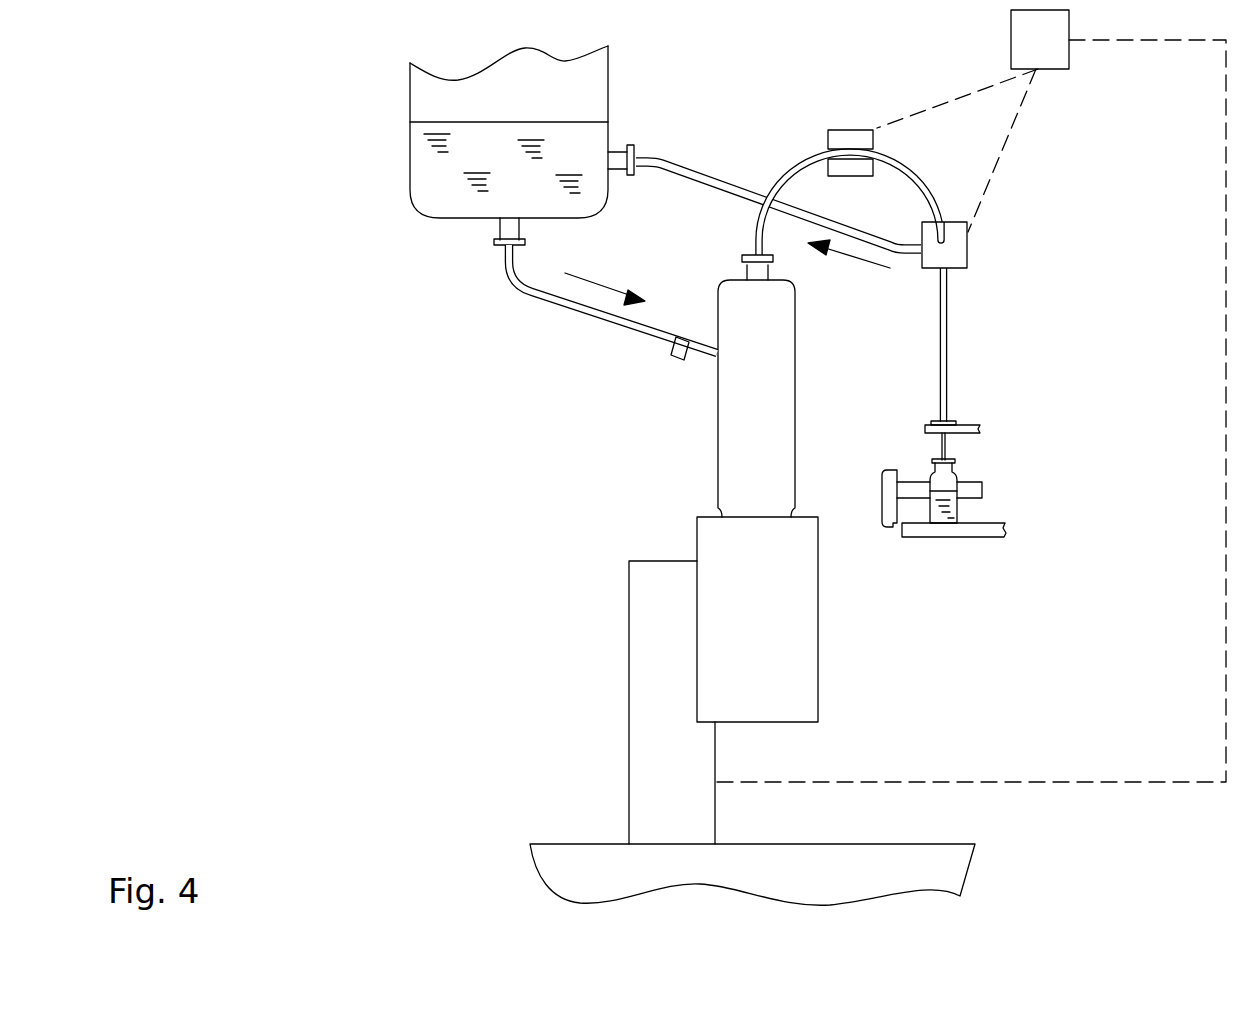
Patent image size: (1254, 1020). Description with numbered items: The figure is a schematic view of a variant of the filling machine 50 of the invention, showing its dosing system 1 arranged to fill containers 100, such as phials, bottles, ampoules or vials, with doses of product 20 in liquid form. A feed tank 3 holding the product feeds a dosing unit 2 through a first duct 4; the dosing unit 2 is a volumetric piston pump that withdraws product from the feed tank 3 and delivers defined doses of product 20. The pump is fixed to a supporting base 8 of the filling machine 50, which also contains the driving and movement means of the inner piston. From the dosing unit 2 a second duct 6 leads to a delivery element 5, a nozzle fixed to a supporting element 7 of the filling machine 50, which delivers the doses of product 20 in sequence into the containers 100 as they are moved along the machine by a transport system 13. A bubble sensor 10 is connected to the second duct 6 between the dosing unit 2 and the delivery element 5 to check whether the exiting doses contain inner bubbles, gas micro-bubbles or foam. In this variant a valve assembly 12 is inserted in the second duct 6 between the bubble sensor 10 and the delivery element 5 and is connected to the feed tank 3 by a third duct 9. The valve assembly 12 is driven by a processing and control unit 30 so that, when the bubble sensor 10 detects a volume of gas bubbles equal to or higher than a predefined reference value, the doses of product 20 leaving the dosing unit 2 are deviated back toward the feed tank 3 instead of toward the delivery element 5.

The dosing system 1 is at (505, 415).
The dosing unit 2 is at (753, 466).
The feed tank 3 is at (410, 95).
The first duct 4 is at (545, 300).
The delivery element 5 is at (945, 438).
The second duct 6 is at (943, 310).
The supporting element 7 is at (965, 428).
The supporting base 8 is at (648, 647).
The third duct 9 is at (683, 168).
The bubble sensor 10 is at (840, 138).
The valve assembly 12 is at (955, 255).
The transport system 13 is at (888, 541).
The dose of product 20 is at (940, 515).
The processing and control unit 30 is at (1027, 42).
The filling machine 50 is at (558, 791).
The container 100 is at (950, 478).